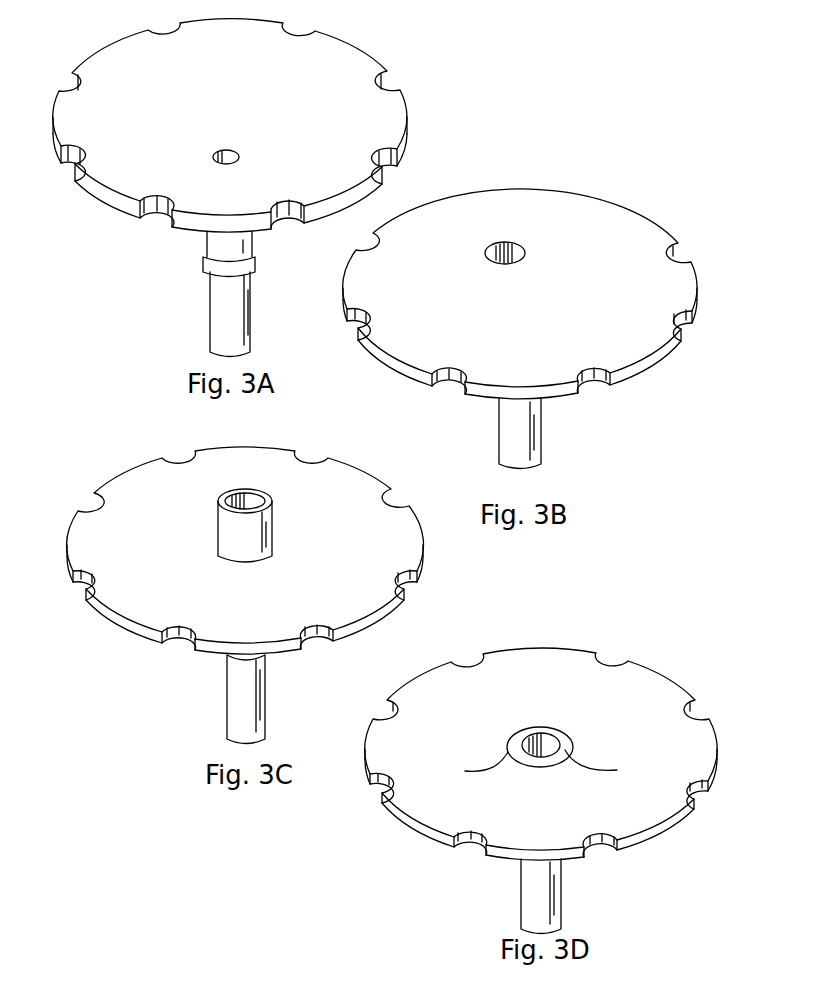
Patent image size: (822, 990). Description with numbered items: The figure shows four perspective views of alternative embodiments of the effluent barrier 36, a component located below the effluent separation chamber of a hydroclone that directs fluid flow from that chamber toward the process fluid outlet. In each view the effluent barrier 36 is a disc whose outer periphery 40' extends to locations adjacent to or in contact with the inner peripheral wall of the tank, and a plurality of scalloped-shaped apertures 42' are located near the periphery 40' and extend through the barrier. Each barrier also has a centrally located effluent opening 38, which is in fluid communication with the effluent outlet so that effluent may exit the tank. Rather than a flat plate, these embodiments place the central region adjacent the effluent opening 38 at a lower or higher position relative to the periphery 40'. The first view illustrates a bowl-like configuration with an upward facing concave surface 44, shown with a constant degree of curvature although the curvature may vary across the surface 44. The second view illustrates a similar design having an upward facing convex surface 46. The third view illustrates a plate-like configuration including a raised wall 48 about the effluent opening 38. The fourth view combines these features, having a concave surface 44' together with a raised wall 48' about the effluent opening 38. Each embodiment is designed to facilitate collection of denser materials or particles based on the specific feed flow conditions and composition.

In FIG. 3A, the effluent barrier 36 is at (377, 117).
In FIG. 3B, the effluent barrier 36 is at (616, 230).
In FIG. 3C, the effluent barrier 36 is at (153, 600).
In FIG. 3D, the effluent barrier 36 is at (653, 696).
In FIG. 3A, the effluent opening 38 is at (229, 157).
In FIG. 3B, the effluent opening 38 is at (526, 250).
In FIG. 3C, the effluent opening 38 is at (250, 500).
In FIG. 3D, the effluent opening 38 is at (545, 743).
In FIG. 3A, the outer periphery 40' is at (252, 126).
In FIG. 3B, the outer periphery 40' is at (542, 323).
In FIG. 3C, the outer periphery 40' is at (234, 558).
In FIG. 3D, the outer periphery 40' is at (564, 789).
In FIG. 3A, the apertures 42' is at (254, 140).
In FIG. 3B, the apertures 42' is at (543, 320).
In FIG. 3C, the apertures 42' is at (231, 597).
In FIG. 3D, the apertures 42' is at (563, 769).
In FIG. 3A, the upward facing concave surface 44 is at (152, 187).
In FIG. 3D, the concave surface 44' is at (451, 863).
In FIG. 3B, the upward facing convex surface 46 is at (624, 345).
In FIG. 3C, the raised wall 48 is at (178, 586).
In FIG. 3D, the raised wall 48' is at (493, 706).